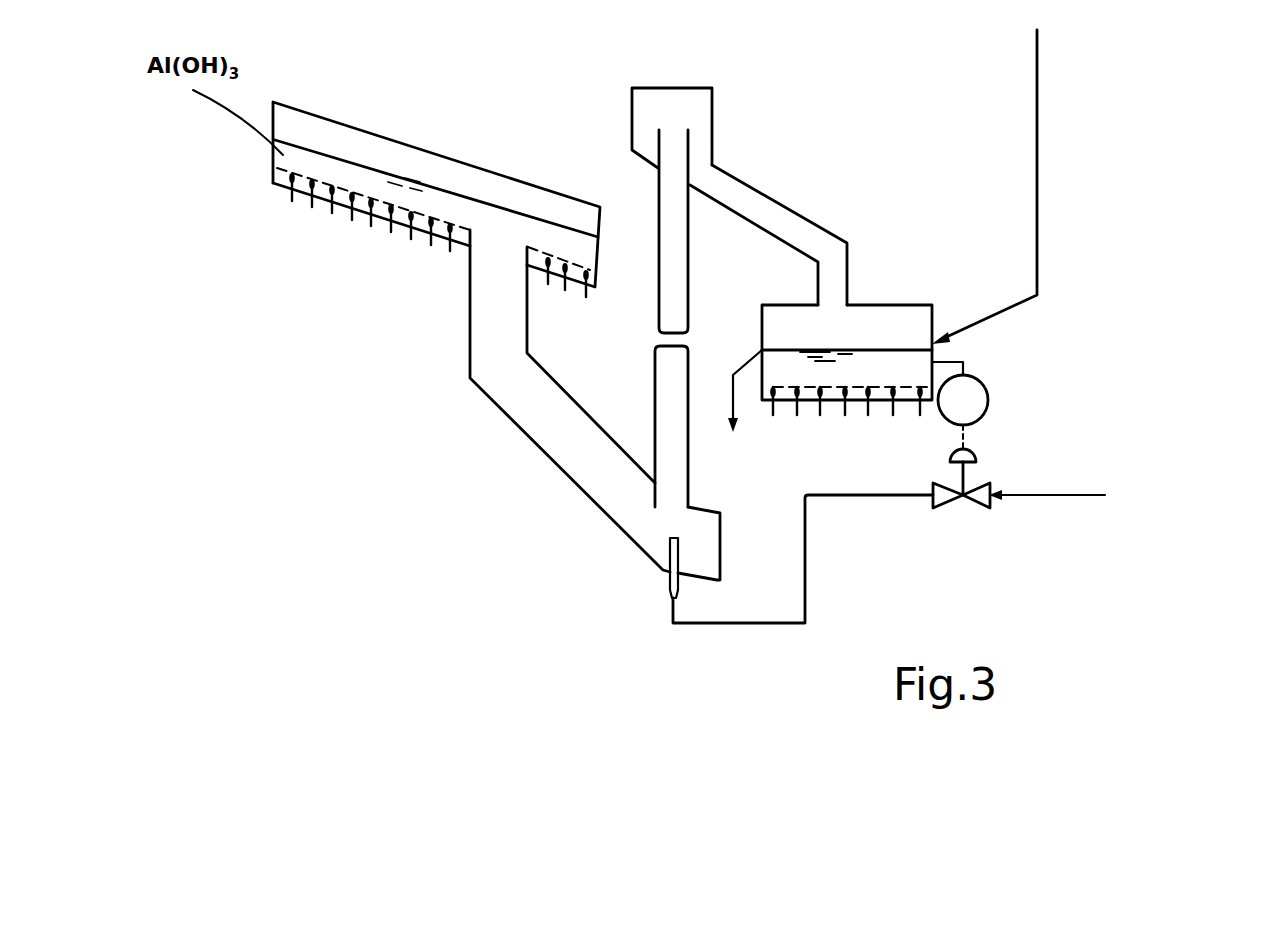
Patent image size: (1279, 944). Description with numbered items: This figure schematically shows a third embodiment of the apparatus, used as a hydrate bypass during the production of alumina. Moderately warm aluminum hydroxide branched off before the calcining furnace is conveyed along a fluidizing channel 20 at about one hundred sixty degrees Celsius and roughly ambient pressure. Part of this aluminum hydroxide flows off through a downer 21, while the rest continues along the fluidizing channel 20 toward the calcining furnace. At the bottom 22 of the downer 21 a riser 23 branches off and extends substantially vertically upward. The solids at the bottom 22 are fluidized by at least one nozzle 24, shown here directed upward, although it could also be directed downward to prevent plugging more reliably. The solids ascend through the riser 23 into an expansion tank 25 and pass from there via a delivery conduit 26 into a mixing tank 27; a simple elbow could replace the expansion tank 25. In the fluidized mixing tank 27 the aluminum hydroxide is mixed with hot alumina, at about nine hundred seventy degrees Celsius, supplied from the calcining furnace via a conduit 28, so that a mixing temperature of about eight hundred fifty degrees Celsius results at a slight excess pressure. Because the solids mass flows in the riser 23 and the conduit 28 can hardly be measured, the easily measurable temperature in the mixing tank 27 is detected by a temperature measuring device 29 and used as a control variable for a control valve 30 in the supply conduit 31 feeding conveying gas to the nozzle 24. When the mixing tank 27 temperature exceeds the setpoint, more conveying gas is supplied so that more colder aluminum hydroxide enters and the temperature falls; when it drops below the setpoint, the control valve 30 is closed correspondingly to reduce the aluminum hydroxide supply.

The fluidizing channel 20 is at (403, 139).
The downer 21 is at (538, 428).
The bottom of the downer 22 is at (707, 558).
The riser 23 is at (675, 282).
The nozzle 24 is at (670, 588).
The expansion tank 25 is at (698, 113).
The delivery conduit 26 is at (782, 222).
The mixing tank 27 is at (895, 305).
The conduit 28 is at (1037, 182).
The temperature measuring device 29 is at (988, 388).
The control valve 30 is at (983, 477).
The supply conduit 31 is at (805, 565).